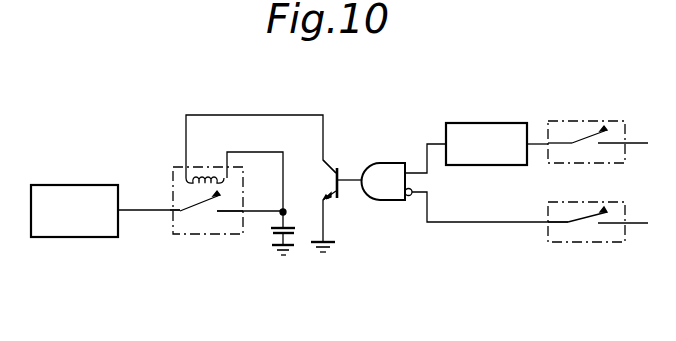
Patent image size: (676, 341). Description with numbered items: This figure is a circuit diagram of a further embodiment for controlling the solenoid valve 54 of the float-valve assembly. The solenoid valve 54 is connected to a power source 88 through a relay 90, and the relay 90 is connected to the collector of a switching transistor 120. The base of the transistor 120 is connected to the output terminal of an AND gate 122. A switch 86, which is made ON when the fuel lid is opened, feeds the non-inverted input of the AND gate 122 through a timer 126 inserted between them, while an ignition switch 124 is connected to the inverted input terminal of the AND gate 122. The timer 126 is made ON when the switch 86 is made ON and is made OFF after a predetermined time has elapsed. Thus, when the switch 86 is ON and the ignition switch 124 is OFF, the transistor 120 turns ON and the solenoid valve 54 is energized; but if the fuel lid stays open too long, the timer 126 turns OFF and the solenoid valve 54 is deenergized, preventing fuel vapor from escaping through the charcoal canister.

The solenoid valve 54 is at (67, 237).
The relay 90 is at (210, 237).
The power source 88 is at (303, 232).
The switching transistor 120 is at (338, 170).
The AND gate 122 is at (386, 172).
The timer 126 is at (480, 122).
The switch 86 is at (567, 120).
The ignition switch 124 is at (577, 243).